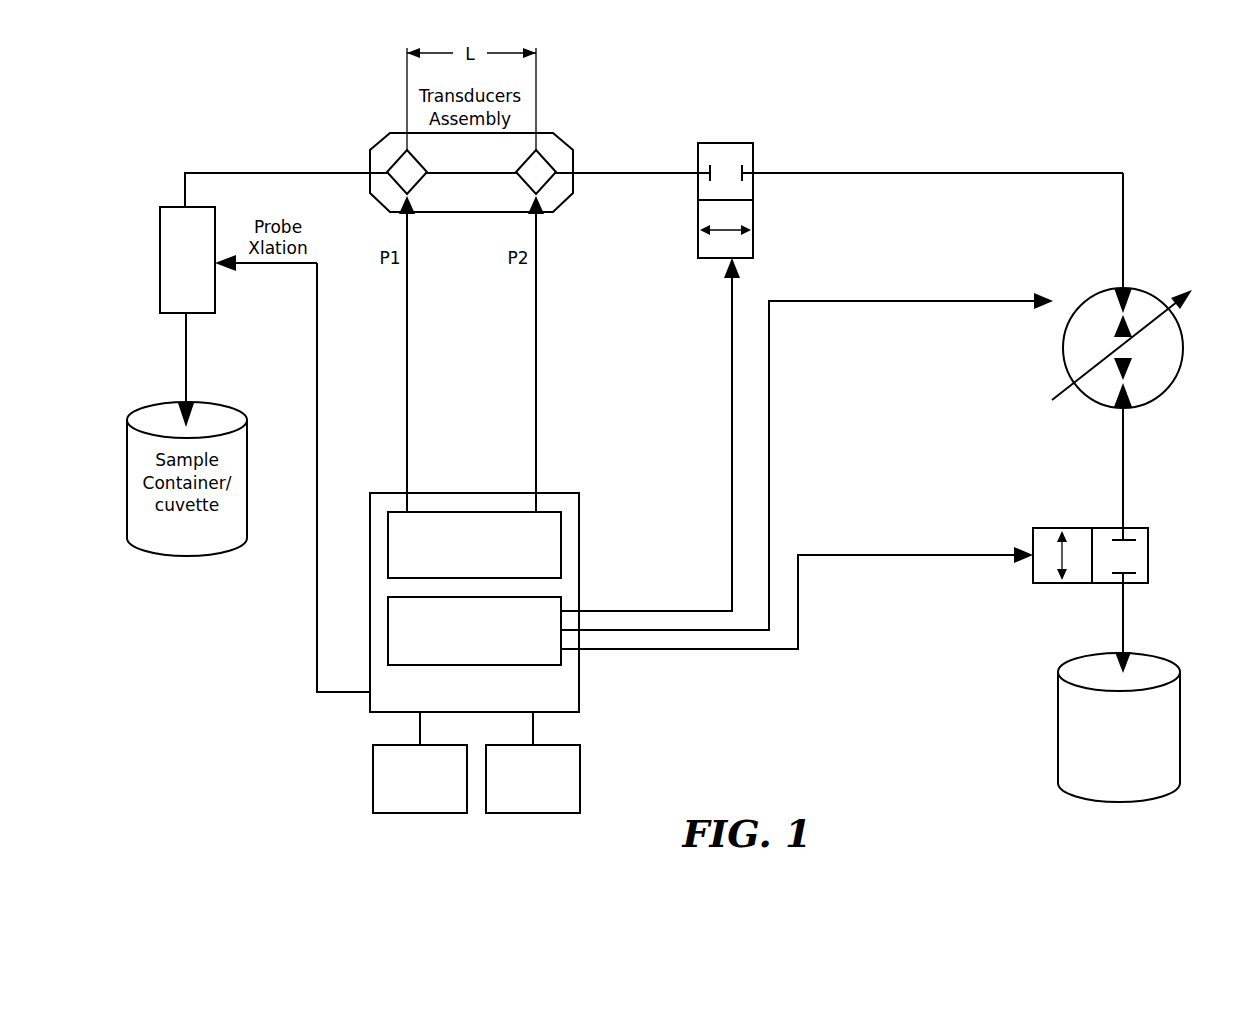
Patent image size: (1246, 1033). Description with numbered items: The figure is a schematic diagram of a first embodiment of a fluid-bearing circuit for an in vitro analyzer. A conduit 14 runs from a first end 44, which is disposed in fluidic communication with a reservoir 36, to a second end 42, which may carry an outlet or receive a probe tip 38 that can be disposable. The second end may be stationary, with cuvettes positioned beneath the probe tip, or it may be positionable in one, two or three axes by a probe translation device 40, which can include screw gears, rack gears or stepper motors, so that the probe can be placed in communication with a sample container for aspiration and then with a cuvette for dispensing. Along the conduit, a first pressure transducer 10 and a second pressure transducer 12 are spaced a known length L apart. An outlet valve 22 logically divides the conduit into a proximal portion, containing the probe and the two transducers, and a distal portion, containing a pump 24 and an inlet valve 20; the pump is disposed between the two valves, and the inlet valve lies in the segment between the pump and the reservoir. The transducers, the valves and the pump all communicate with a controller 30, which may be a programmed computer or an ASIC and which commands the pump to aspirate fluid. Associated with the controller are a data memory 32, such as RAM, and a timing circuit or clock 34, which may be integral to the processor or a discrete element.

The first pressure transducer 10 is at (404, 171).
The second pressure transducer 12 is at (539, 171).
The conduit 14 is at (233, 172).
The inlet valve 20 is at (1140, 561).
The outlet valve 22 is at (752, 151).
The pump 24 is at (1110, 288).
The controller 30 is at (527, 706).
The data memory 32 is at (409, 804).
The timing circuit or clock 34 is at (522, 804).
The reservoir 36 is at (1108, 784).
The probe tip 38 is at (192, 406).
The probe translation device 40 is at (176, 271).
The second end of the conduit 42 is at (166, 356).
The first end of the conduit 44 is at (1135, 636).